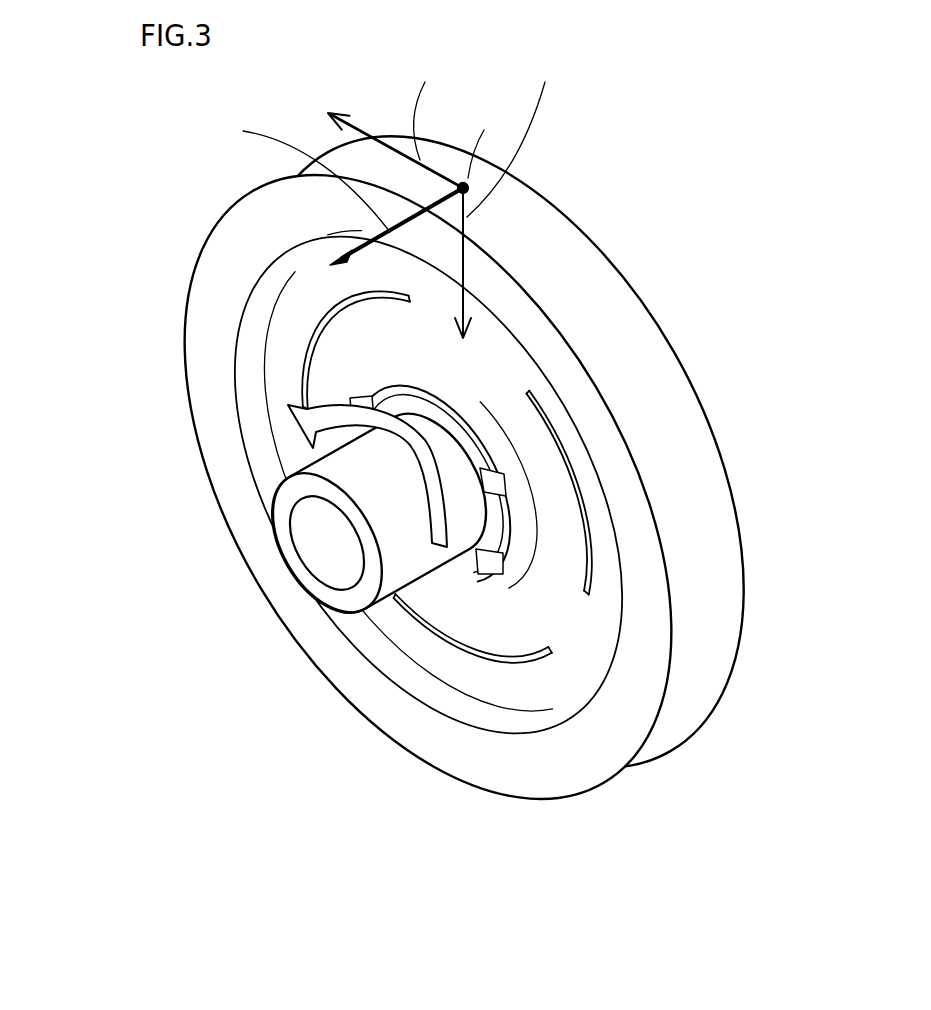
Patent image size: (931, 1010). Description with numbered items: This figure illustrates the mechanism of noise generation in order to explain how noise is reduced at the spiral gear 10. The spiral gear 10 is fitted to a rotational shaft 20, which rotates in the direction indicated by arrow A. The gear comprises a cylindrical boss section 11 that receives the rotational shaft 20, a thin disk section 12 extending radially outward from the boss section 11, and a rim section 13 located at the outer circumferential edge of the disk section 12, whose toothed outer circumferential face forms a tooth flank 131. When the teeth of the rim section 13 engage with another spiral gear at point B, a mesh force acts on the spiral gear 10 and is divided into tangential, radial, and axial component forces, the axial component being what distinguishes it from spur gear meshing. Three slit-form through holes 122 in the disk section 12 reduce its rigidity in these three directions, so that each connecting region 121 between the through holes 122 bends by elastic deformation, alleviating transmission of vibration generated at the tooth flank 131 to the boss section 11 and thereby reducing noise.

The spiral gear 10 is at (623, 217).
The boss section 11 is at (457, 578).
The disk section 12 is at (600, 637).
The connecting region 121 is at (563, 622).
The through hole 122 is at (522, 652).
The rim section 13 is at (357, 680).
The tooth flank 131 is at (670, 420).
The rotational shaft 20 is at (303, 577).